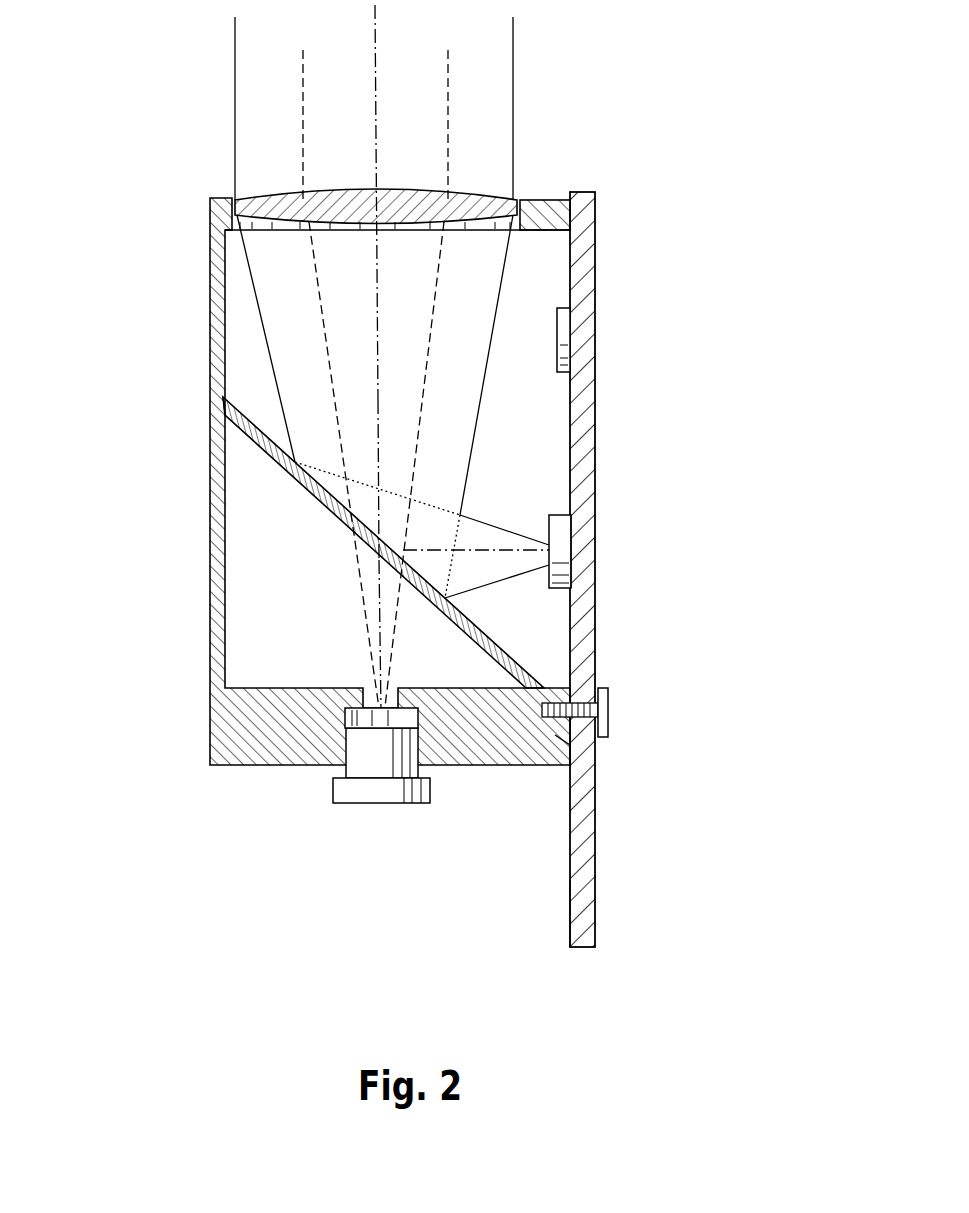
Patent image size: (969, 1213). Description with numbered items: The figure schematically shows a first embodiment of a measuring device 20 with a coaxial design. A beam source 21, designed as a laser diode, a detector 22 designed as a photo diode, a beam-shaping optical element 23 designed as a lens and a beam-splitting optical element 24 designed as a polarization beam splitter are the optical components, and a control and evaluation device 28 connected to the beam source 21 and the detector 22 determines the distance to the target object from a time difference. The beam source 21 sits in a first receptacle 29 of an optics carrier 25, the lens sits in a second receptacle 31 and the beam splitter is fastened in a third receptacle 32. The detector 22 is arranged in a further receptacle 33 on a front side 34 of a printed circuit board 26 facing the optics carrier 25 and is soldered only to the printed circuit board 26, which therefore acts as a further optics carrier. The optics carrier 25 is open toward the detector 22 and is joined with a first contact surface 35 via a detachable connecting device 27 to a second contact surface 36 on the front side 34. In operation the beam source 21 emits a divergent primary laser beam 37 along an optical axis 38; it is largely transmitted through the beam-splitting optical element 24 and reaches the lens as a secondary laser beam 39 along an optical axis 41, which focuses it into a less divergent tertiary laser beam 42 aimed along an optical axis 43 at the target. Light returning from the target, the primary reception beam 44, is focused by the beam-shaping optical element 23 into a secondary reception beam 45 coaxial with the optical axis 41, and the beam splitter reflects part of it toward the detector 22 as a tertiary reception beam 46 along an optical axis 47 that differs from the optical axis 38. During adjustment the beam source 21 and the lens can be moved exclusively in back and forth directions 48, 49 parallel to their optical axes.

The measuring device 20 is at (289, 870).
The beam source 21 is at (377, 805).
The detector 22 is at (563, 540).
The beam-shaping optical element 23 is at (398, 192).
The beam-splitting optical element 24 is at (323, 503).
The optics carrier 25 is at (210, 575).
The printed circuit board 26 is at (596, 856).
The connecting device 27 is at (607, 697).
The control and evaluation device 28 is at (563, 325).
The first receptacle 29 is at (343, 722).
The second receptacle 31 is at (236, 233).
The third receptacle 32 is at (214, 418).
The further receptacle 33 is at (583, 521).
The front side 34 is at (577, 900).
The first contact surface 35 is at (572, 210).
The second contact surface 36 is at (566, 738).
The primary laser beam 37 is at (372, 652).
The optical axis 38 is at (378, 612).
The secondary laser beam 39 is at (420, 402).
The optical axis 41 is at (383, 287).
The tertiary laser beam 42 is at (302, 88).
The optical axis 43 is at (375, 17).
The primary reception beam 44 is at (515, 133).
The secondary reception beam 45 is at (268, 333).
The tertiary reception beam 46 is at (507, 530).
The optical axis 47 is at (525, 552).
The back and/or forth direction 48 is at (180, 722).
The back and/or forth direction 49 is at (177, 176).